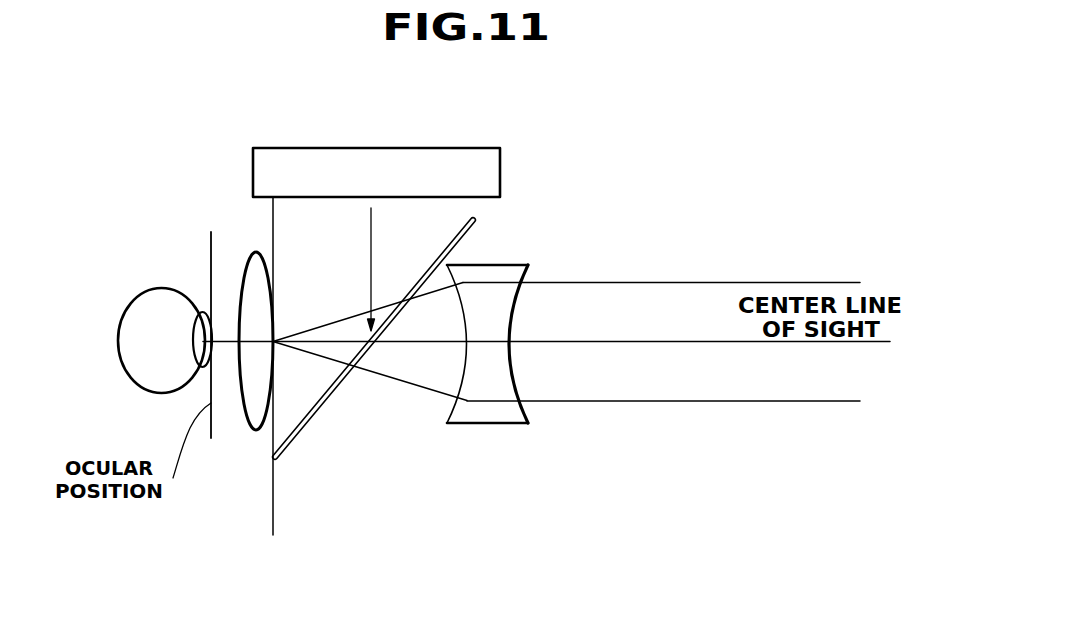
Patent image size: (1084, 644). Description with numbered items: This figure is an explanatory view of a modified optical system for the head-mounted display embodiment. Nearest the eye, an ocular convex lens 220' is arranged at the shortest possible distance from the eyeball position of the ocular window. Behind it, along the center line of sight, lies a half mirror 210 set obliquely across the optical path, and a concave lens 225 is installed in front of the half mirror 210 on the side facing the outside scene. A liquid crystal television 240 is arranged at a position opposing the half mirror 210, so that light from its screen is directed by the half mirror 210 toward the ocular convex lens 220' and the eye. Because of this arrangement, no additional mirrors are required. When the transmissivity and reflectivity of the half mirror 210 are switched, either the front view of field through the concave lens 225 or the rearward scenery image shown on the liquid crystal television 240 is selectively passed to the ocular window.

The liquid crystal television 240 is at (482, 150).
The concave lens 225 is at (508, 265).
The half mirror 210 is at (338, 382).
The ocular convex lens 220' is at (303, 420).